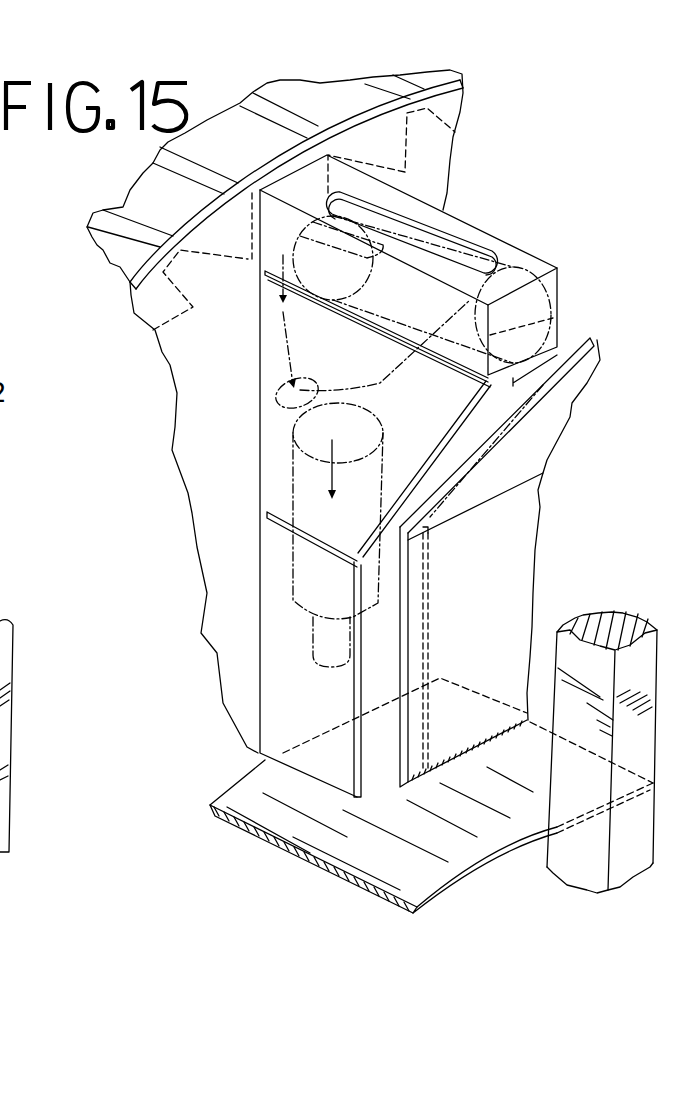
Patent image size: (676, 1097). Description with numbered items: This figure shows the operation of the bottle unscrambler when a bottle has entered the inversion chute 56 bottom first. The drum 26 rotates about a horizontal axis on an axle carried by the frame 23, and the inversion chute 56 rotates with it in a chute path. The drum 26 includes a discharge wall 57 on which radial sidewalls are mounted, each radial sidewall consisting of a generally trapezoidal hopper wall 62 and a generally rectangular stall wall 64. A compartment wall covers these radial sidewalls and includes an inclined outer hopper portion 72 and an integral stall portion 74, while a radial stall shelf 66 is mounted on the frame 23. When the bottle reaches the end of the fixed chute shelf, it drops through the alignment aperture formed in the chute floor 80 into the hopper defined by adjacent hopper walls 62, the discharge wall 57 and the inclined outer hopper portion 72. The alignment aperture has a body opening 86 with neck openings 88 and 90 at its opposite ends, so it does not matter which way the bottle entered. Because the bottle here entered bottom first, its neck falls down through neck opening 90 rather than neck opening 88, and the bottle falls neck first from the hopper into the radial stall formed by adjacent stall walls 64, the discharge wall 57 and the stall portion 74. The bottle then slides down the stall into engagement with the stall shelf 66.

The frame 23 is at (639, 617).
The drum 26 is at (274, 92).
The inversion chute 56 is at (516, 247).
The discharge wall 57 is at (178, 392).
The hopper wall 62 is at (273, 453).
The stall wall 64 is at (290, 643).
The stall shelf 66 is at (247, 792).
The inclined outer hopper portion 72 is at (523, 428).
The stall portion 74 is at (505, 563).
The chute floor 80 is at (542, 338).
The body opening 86 is at (337, 298).
The neck opening 88 is at (512, 348).
The neck opening 90 is at (377, 282).